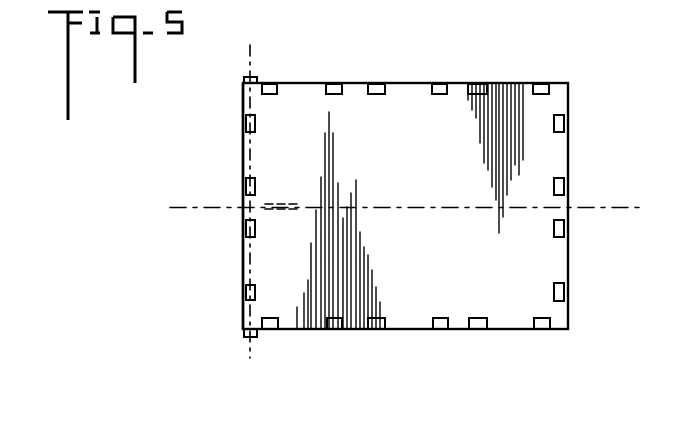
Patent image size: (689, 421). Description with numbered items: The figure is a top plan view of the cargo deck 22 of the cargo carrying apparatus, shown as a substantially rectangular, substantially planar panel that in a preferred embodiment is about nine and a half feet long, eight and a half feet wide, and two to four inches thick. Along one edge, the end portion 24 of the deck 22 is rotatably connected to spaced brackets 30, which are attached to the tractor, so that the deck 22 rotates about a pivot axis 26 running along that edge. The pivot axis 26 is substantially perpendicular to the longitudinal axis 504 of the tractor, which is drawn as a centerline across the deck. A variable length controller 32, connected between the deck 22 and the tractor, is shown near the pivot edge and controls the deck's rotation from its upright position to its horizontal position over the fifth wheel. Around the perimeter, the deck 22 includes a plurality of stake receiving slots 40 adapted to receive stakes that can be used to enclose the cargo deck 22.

The cargo deck 22 is at (568, 152).
The end portion 24 is at (243, 170).
The pivot axis 26 is at (252, 76).
The spaced brackets 30 is at (244, 84).
The variable length controller 32 is at (261, 209).
The stake receiving slots 40 is at (440, 330).
The longitudinal axis 504 is at (625, 196).